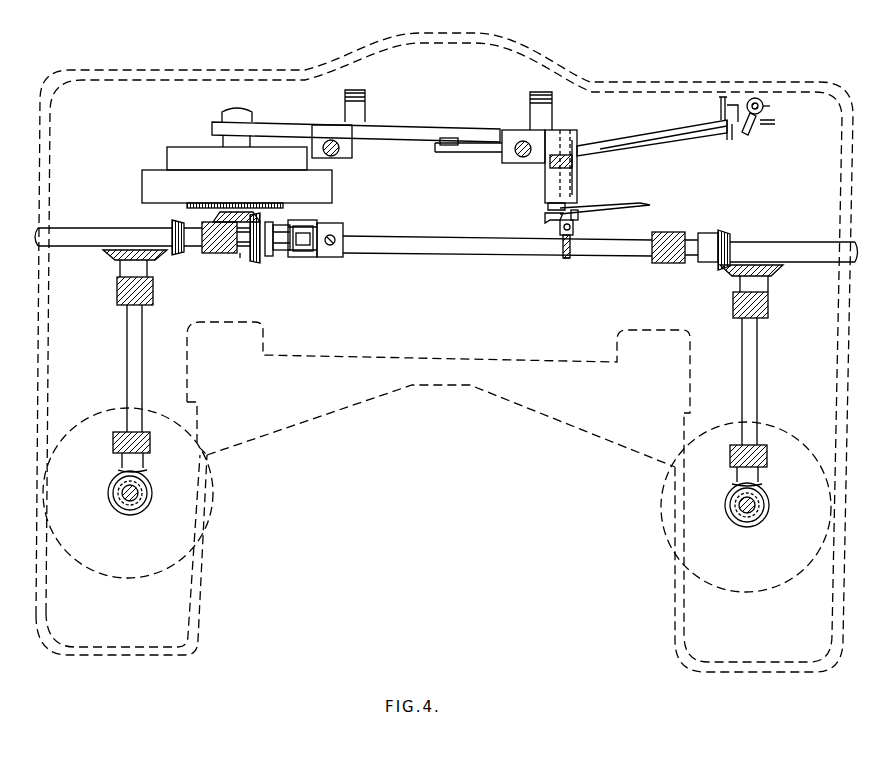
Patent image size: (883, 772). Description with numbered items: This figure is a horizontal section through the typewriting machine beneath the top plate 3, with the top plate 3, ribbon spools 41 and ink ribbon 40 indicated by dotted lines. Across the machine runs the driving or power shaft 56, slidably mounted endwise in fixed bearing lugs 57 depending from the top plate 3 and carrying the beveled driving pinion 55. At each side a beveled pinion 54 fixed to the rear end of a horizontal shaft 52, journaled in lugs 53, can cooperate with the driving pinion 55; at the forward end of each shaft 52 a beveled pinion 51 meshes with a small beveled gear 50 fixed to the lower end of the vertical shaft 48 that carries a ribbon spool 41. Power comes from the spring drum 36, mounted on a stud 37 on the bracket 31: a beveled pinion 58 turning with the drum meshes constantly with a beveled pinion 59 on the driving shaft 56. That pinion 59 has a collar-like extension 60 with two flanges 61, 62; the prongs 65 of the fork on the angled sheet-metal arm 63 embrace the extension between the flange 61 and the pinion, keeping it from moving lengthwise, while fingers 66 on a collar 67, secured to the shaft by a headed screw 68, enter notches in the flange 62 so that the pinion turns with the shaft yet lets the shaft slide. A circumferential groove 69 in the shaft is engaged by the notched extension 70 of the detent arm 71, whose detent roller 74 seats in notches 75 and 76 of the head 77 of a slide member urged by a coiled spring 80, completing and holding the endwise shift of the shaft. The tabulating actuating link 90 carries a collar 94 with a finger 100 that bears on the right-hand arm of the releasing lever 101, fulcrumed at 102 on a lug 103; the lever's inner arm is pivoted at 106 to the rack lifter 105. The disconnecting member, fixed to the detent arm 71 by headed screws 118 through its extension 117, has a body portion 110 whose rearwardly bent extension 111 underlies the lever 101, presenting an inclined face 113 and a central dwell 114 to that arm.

The top plate 3 is at (503, 42).
The bracket 31 is at (384, 128).
The spring drum 36 is at (332, 190).
The stud 37 is at (233, 112).
The ink ribbon 40 is at (363, 396).
The ribbon spools 41 is at (104, 412).
The vertical shaft 48 is at (130, 501).
The beveled gear 50 is at (152, 485).
The beveled pinion 51 is at (120, 470).
The horizontal shaft 52 is at (142, 355).
The lugs 53 is at (117, 293).
The beveled pinion 54 is at (158, 262).
The beveled driving pinion 55 is at (178, 220).
The driving shaft 56 is at (388, 236).
The bearing lugs 57 is at (208, 254).
The beveled pinion 58 is at (222, 212).
The beveled pinion 59 is at (248, 256).
The collar-like extension 60 is at (281, 225).
The flange 61 is at (271, 258).
The flange 62 is at (298, 256).
The angled sheet-metal arm 63 is at (243, 255).
The prongs 65 is at (264, 213).
The fingers 66 is at (310, 220).
The collar 67 is at (340, 257).
The headed screw 68 is at (335, 236).
The circumferential groove 69 is at (567, 258).
The notched extension 70 is at (564, 260).
The detent arm 71 is at (615, 207).
The detent roller 74 is at (564, 232).
The notch 75 is at (578, 217).
The notch 76 is at (545, 216).
The head 77 is at (600, 209).
The coiled spring 80 is at (548, 203).
The actuating link 90 is at (757, 98).
The collar 94 is at (766, 109).
The finger 100 is at (753, 128).
The releasing lever 101 is at (705, 134).
The fulcrum 102 is at (552, 145).
The lug 103 is at (550, 166).
The rack lifter 105 is at (462, 143).
The pivot 106 is at (447, 138).
The body portion 110 is at (600, 143).
The rearwardly bent extension 111 is at (731, 141).
The inclined face 113 is at (737, 110).
The central dwell 114 is at (721, 108).
The extension 117 is at (577, 172).
The headed screws 118 is at (565, 130).